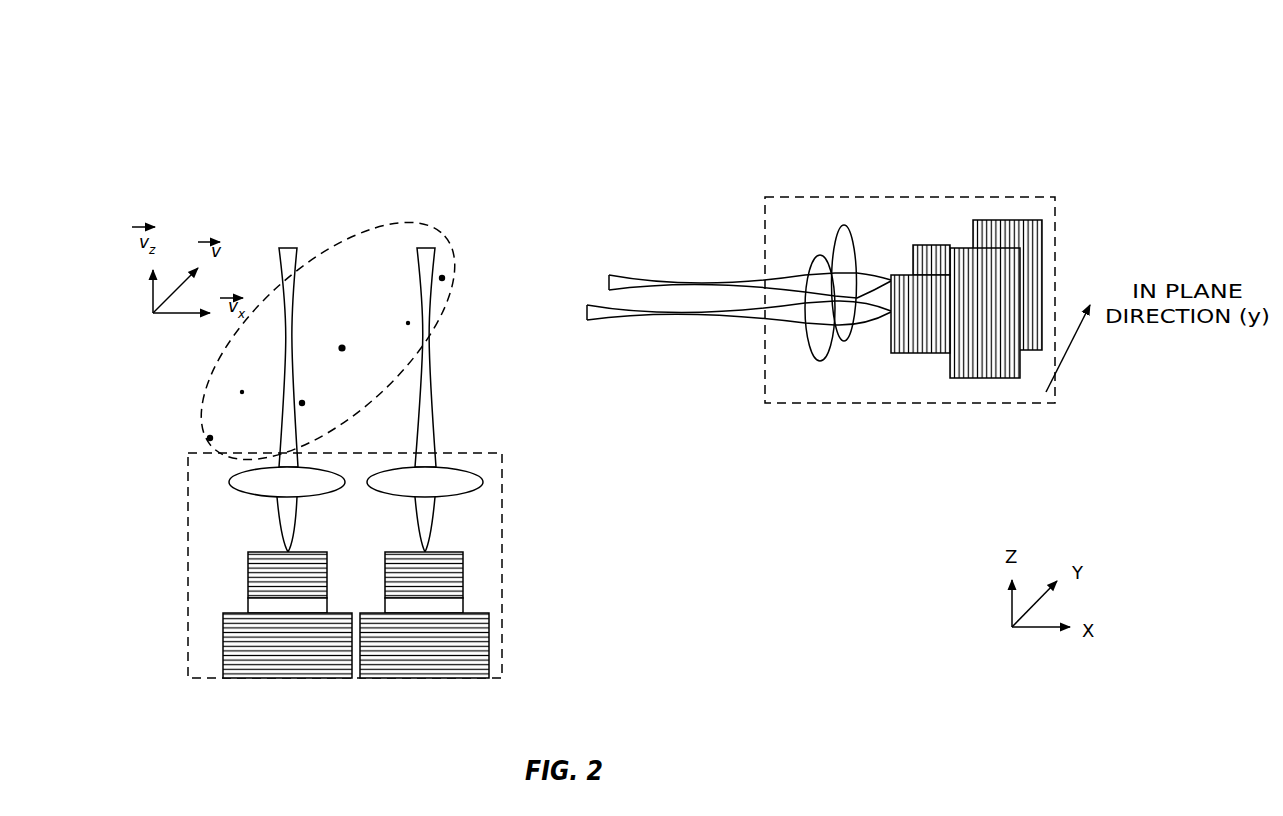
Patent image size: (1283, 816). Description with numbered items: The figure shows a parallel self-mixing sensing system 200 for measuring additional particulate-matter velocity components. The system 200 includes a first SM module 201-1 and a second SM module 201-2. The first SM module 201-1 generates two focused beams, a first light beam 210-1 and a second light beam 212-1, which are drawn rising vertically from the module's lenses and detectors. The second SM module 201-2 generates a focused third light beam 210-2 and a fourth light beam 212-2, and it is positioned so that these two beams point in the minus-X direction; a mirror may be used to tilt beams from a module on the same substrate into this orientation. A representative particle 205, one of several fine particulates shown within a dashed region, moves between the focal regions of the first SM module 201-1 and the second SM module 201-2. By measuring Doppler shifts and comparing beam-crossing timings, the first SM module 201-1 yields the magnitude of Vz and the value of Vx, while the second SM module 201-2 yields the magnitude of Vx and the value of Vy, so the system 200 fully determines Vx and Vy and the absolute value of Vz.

The parallel SM sensing system 200 is at (117, 34).
The first SM module 201-1 is at (180, 593).
The second SM module 201-2 is at (963, 412).
The particle 205 is at (210, 369).
The first light beam 210-1 is at (281, 240).
The second light beam 212-1 is at (425, 242).
The third light beam 210-2 is at (591, 330).
The fourth light beam 212-2 is at (616, 262).